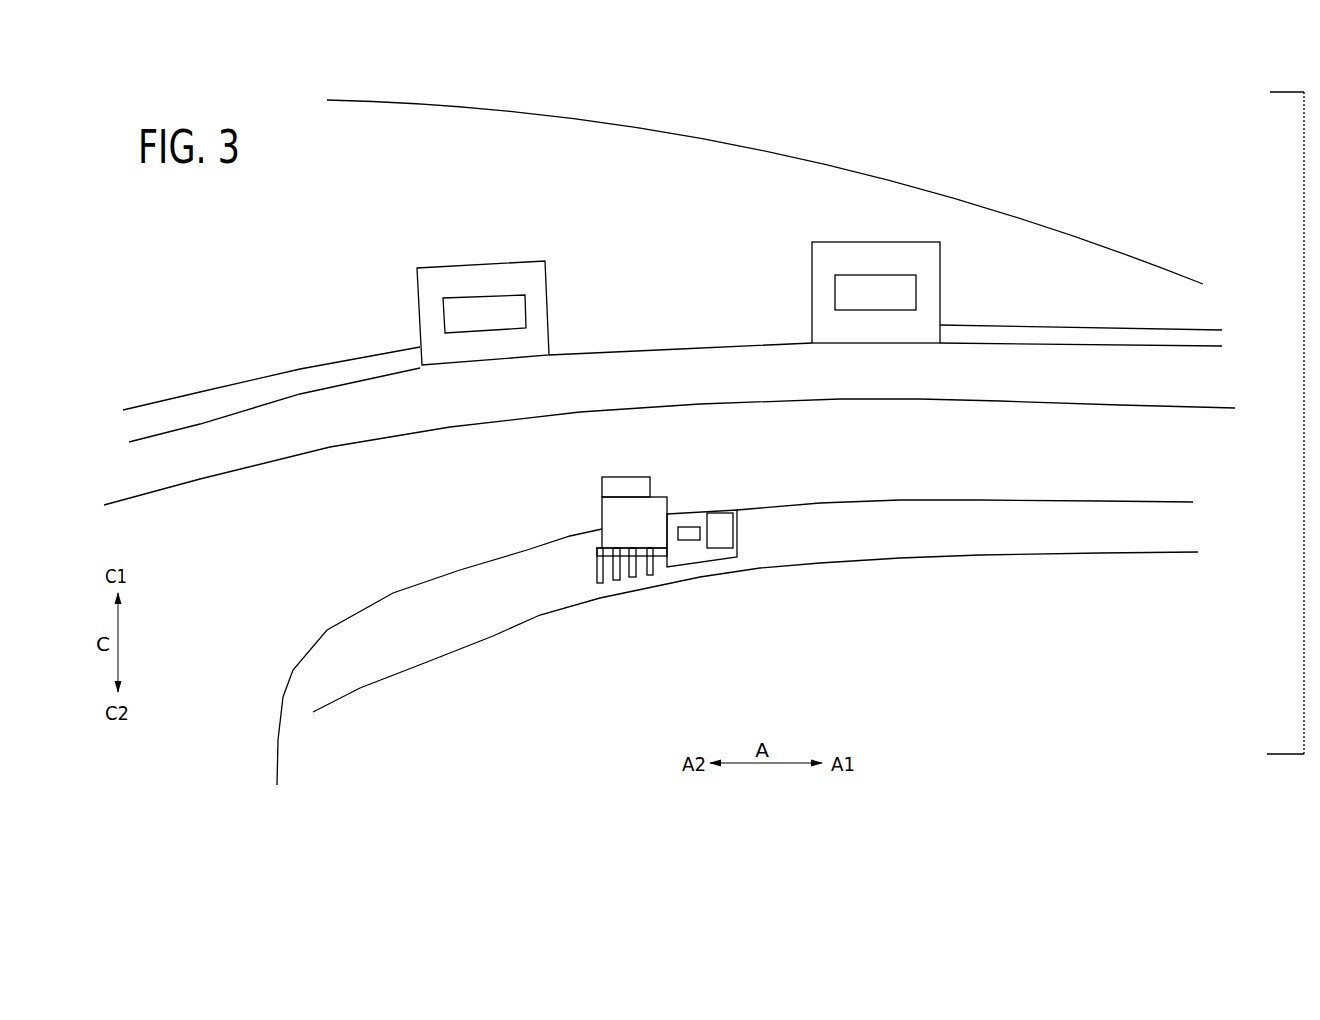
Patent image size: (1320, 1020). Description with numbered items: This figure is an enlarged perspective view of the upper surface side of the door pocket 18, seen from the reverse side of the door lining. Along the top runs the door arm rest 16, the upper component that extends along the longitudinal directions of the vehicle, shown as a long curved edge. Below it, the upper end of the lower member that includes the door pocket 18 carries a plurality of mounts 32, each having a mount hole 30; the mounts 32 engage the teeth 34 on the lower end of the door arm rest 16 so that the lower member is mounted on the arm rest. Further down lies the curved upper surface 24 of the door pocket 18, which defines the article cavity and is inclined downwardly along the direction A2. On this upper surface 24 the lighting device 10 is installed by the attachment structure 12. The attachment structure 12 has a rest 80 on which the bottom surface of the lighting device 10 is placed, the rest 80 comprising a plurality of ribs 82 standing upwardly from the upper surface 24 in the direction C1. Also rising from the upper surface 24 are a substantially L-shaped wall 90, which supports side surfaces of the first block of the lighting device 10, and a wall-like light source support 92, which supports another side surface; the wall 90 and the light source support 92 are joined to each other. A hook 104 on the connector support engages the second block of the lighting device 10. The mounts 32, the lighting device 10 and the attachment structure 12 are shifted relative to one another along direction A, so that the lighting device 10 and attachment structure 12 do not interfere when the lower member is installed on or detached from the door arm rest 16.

The lighting device 10 is at (664, 540).
The attachment structure 12 is at (735, 541).
The door arm rest 16 is at (678, 148).
The door pocket 18 is at (1228, 378).
The upper surface 24 is at (1110, 518).
The mount hole 30 is at (681, 264).
The mount 32 is at (713, 280).
The tooth 34 is at (507, 306).
The rest 80 is at (596, 540).
The rib 82 is at (613, 583).
The wall 90 is at (738, 536).
The light source support 92 is at (688, 553).
The hook 104 is at (626, 487).